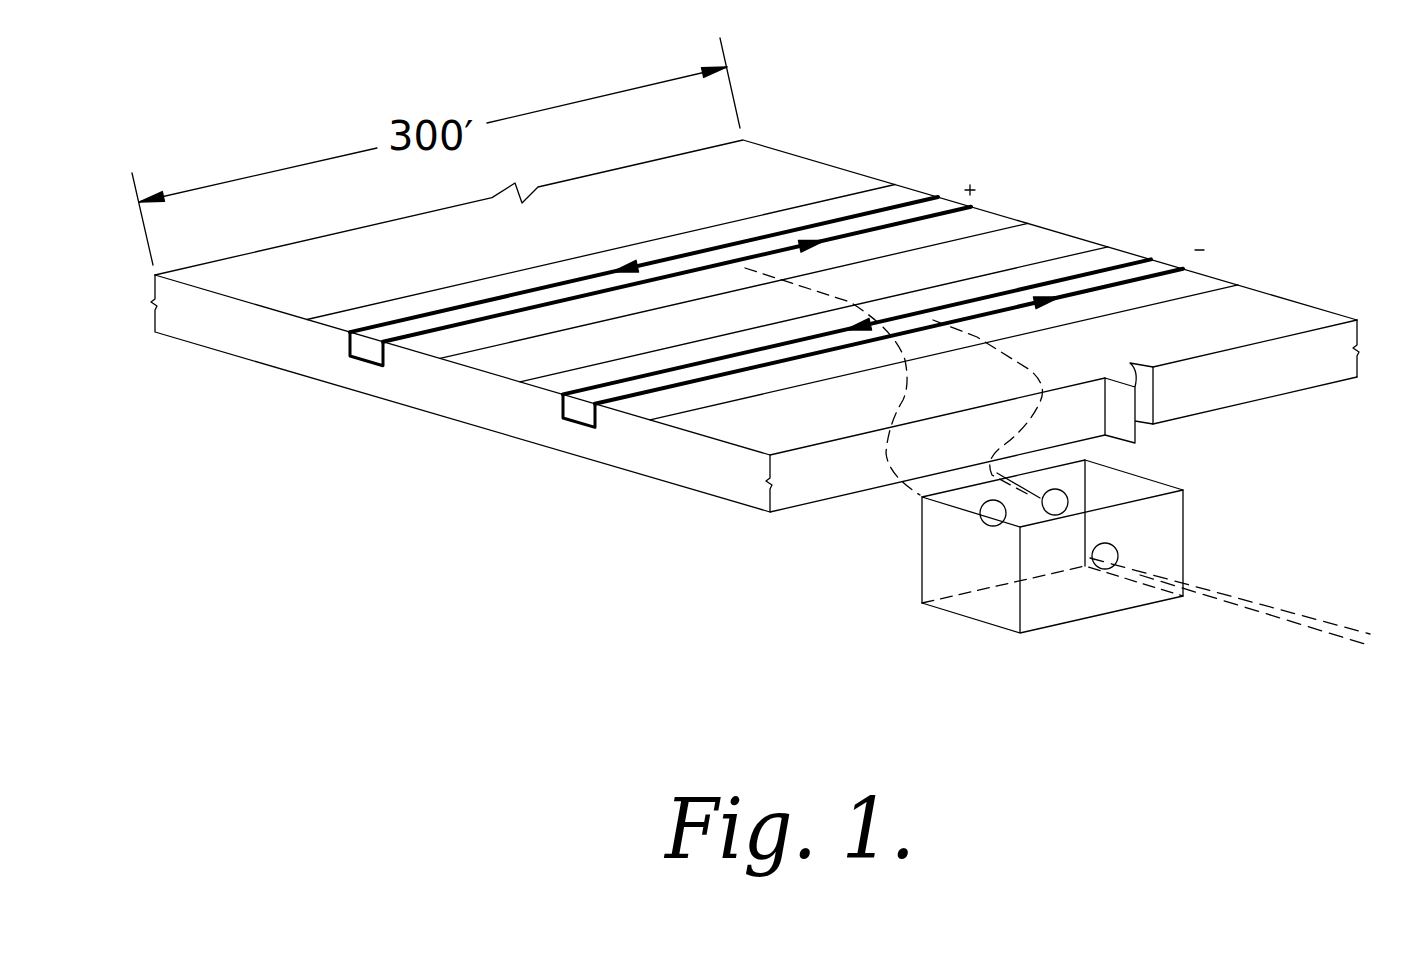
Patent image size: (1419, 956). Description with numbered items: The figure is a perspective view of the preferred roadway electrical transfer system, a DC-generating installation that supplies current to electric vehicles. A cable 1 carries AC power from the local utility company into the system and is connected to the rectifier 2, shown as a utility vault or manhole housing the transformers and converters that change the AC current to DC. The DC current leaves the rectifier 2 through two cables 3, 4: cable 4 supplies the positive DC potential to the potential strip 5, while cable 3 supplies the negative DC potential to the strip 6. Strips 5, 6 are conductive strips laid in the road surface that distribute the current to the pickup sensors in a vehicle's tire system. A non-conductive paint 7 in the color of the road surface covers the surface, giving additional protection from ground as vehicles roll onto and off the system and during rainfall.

The cable 1 is at (1247, 603).
The rectifier 2 is at (1107, 510).
The cable 3 is at (993, 468).
The cable 4 is at (915, 488).
The potential strip 5 is at (363, 352).
The strip 6 is at (577, 413).
The non-conductive paint 7 is at (873, 240).